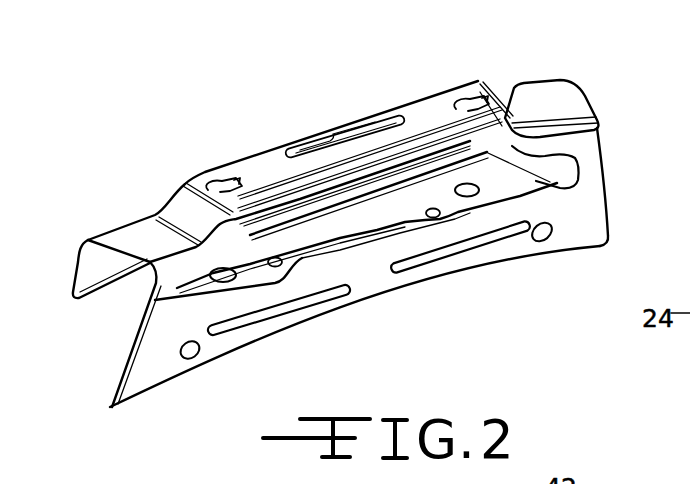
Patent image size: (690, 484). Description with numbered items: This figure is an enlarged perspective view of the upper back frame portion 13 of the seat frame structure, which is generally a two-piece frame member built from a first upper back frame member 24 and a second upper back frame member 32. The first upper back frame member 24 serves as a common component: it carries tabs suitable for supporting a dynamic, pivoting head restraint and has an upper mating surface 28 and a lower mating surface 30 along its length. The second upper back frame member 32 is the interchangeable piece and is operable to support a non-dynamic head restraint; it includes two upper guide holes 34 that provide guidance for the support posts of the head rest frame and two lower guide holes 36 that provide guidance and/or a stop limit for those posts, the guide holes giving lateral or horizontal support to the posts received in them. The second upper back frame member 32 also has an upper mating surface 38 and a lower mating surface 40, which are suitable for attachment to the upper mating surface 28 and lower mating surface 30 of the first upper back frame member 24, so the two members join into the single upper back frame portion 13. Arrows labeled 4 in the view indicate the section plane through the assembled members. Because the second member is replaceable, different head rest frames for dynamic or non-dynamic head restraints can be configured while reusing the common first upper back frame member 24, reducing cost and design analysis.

The upper back frame portion 13 is at (519, 72).
The first upper back frame member 24 is at (610, 205).
The upper mating surface 28 is at (285, 192).
The lower mating surface 30 is at (360, 247).
The second upper back frame member 32 is at (587, 96).
The upper guide holes 34 is at (218, 181).
The lower guide holes 36 is at (224, 283).
The upper mating surface 38 is at (422, 130).
The lower mating surface 40 is at (318, 245).
The section line 4- 4 is at (474, 81).